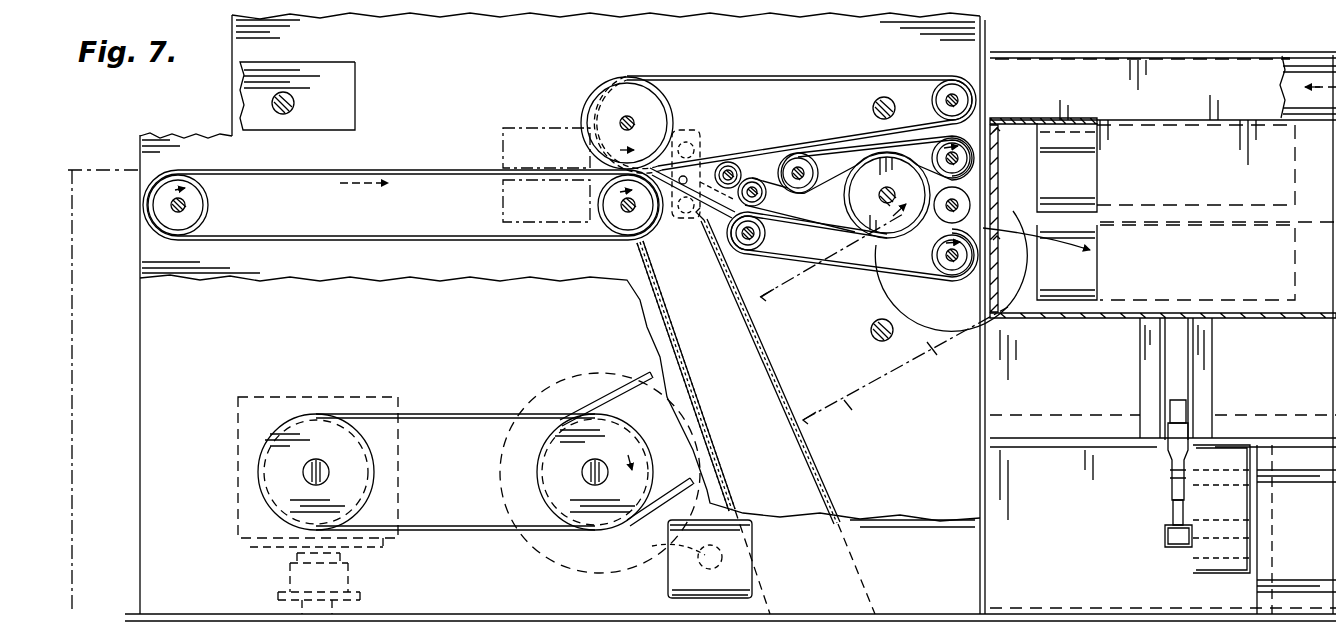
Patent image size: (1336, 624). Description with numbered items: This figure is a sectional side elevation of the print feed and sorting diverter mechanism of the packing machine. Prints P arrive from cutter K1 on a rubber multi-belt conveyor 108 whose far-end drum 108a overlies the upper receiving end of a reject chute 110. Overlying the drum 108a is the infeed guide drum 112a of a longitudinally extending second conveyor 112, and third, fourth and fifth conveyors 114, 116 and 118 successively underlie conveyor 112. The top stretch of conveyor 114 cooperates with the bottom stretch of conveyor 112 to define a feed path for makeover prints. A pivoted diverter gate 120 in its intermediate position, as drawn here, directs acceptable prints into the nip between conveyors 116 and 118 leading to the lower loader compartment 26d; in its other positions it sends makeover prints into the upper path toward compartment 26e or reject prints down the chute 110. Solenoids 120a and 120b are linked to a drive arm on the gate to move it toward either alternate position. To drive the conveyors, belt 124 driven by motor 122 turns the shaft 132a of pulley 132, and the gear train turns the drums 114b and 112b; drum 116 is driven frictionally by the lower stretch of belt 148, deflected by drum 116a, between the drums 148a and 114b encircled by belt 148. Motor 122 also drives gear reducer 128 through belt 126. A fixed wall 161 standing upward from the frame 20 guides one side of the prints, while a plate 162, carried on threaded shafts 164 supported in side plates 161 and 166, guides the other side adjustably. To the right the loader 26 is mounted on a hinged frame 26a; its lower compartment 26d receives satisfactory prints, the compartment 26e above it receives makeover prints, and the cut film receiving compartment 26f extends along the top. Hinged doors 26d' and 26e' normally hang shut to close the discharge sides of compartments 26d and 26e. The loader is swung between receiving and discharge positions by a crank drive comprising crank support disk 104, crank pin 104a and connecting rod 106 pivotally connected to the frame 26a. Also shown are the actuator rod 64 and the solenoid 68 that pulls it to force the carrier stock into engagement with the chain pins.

The frame 20 is at (258, 611).
The loader 26 is at (1200, 50).
The loader support frame 26a is at (1170, 370).
The lower compartment 26d is at (1045, 262).
The hinged door 26d' is at (1172, 262).
The compartment 26e is at (1045, 167).
The hinged door 26e' is at (1171, 165).
The cut film receiving compartment 26f is at (1315, 56).
The actuator rod 64 is at (668, 546).
The solenoid 68 is at (704, 587).
The crank support disk 104 is at (1217, 553).
The crank pin 104a is at (1163, 534).
The connecting rod 106 is at (1170, 482).
The rubber multi-belt conveyor 108 is at (442, 170).
The far-end drum 108a is at (612, 222).
The reject chute 110 is at (782, 362).
The second rubber multibelt conveyor 112 is at (724, 160).
The infeed guide drum 112a is at (655, 78).
The drum 112b is at (942, 80).
The third conveyor 114 is at (745, 160).
The drum 114b is at (938, 150).
The fourth conveyor drum 116 is at (820, 214).
The drum 116a is at (865, 195).
The fifth conveyor 118 is at (772, 225).
The pivoted diverter gate 120 is at (703, 188).
The solenoid 120a is at (520, 127).
The solenoid 120b is at (503, 200).
The motor 122 is at (522, 553).
The belt 124 is at (846, 406).
The belt 126 is at (453, 416).
The gear reducer 128 is at (262, 395).
The pulley 132 is at (930, 348).
The shaft 132a is at (900, 290).
The belt 148 is at (852, 152).
The drum 148a is at (812, 160).
The fixed wall 161 is at (525, 50).
The plate 162 is at (355, 72).
The shafts 164 is at (283, 114).
The side plate 166 is at (487, 318).
The cutter K1 is at (98, 168).
The prints P is at (378, 175).